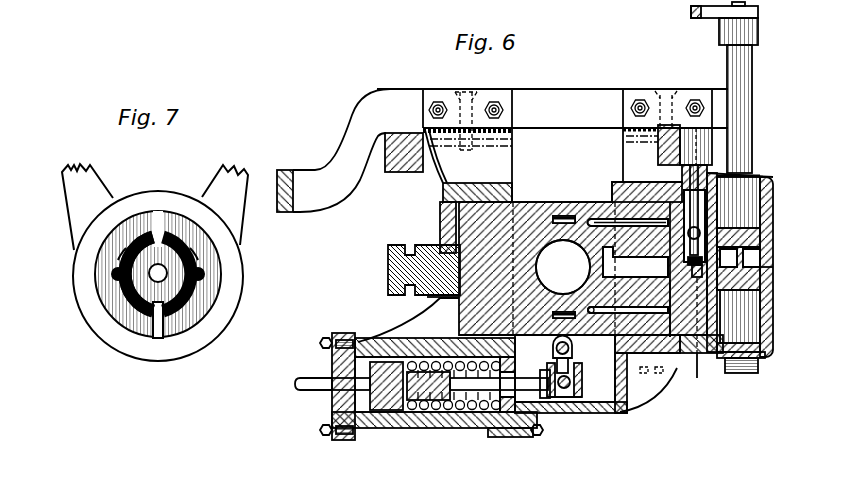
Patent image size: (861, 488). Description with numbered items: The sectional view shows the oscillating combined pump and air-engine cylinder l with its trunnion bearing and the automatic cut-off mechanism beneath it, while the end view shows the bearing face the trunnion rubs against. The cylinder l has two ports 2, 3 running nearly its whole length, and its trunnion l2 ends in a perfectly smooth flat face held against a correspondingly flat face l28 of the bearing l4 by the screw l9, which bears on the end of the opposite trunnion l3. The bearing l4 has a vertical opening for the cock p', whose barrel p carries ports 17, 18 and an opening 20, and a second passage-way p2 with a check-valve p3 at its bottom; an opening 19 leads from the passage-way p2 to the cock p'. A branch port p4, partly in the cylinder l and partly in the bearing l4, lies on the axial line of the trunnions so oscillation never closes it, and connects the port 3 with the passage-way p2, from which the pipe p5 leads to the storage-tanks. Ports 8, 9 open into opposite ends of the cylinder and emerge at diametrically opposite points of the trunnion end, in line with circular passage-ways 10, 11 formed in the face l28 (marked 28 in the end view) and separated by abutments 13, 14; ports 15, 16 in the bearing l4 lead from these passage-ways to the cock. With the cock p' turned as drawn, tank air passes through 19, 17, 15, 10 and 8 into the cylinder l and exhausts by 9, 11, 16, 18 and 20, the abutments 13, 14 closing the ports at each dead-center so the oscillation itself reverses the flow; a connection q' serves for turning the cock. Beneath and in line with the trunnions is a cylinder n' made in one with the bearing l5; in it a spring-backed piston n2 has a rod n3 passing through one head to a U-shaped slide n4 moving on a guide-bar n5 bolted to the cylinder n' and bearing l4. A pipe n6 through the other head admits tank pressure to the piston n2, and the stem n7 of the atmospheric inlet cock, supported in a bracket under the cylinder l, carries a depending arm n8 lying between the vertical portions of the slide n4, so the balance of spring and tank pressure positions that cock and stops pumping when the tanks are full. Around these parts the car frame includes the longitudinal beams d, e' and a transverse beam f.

In FIG. 6, the bracket arm e' is at (350, 150).
In FIG. 6, the transverse beam f is at (552, 145).
In FIG. 6, the longitudinal beam d is at (662, 128).
In FIG. 6, the cylinder l is at (566, 202).
In FIG. 7, the cylinder l is at (144, 238).
In FIG. 6, the trunnion l2 is at (605, 200).
In FIG. 6, the trunnion l3 is at (450, 222).
In FIG. 6, the bearing l4 is at (638, 184).
In FIG. 7, the bearing l4 is at (213, 335).
In FIG. 6, the bearing l5 is at (441, 333).
In FIG. 6, the screw l9 is at (413, 271).
In FIG. 6, the face of the bearing l28 is at (672, 296).
In FIG. 6, the port 3 is at (552, 214).
In FIG. 6, the port 9 is at (592, 219).
In FIG. 6, the port 8 is at (600, 311).
In FIG. 6, the port 2 is at (545, 335).
In FIG. 6, the passage-way 11 is at (669, 194).
In FIG. 7, the passage-way 11 is at (203, 262).
In FIG. 6, the valve p is at (741, 331).
In FIG. 6, the cock p' is at (749, 242).
In FIG. 6, the passage-way p2 is at (700, 218).
In FIG. 6, the check-valve p3 is at (700, 340).
In FIG. 6, the port p4 is at (635, 262).
In FIG. 7, the port p4 is at (166, 273).
In FIG. 6, the pipe p5 is at (760, 239).
In FIG. 6, the actuating rod q' is at (722, 87).
In FIG. 6, the port 17 is at (728, 258).
In FIG. 6, the port 18 is at (751, 258).
In FIG. 6, the opening 19 is at (762, 244).
In FIG. 6, the opening 20 is at (768, 269).
In FIG. 6, the passage-way 10 is at (690, 365).
In FIG. 7, the passage-way 10 is at (119, 253).
In FIG. 6, the cylinder n' is at (434, 395).
In FIG. 6, the piston n2 is at (386, 430).
In FIG. 6, the piston-rod n3 is at (546, 415).
In FIG. 6, the U-shaped slide n4 is at (595, 414).
In FIG. 6, the guide-bar n5 is at (458, 428).
In FIG. 6, the pipe n6 is at (331, 373).
In FIG. 6, the stem n7 is at (575, 349).
In FIG. 6, the arm n8 is at (582, 369).
In FIG. 7, the abutment 13 is at (155, 226).
In FIG. 7, the abutment 14 is at (157, 343).
In FIG. 7, the port 15 is at (113, 278).
In FIG. 7, the port 16 is at (204, 277).
In FIG. 7, the segment ring 28 is at (164, 207).